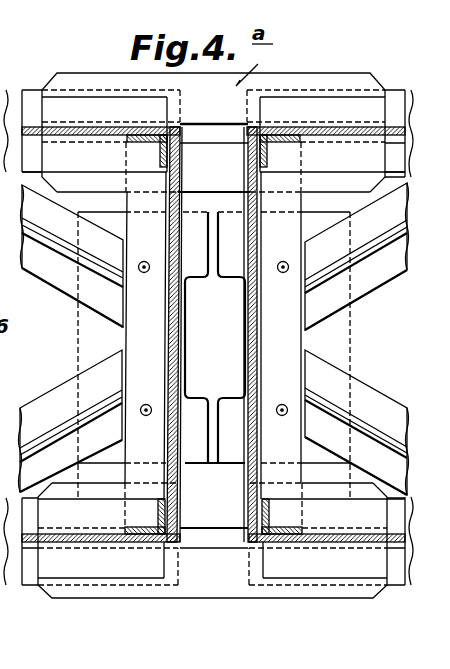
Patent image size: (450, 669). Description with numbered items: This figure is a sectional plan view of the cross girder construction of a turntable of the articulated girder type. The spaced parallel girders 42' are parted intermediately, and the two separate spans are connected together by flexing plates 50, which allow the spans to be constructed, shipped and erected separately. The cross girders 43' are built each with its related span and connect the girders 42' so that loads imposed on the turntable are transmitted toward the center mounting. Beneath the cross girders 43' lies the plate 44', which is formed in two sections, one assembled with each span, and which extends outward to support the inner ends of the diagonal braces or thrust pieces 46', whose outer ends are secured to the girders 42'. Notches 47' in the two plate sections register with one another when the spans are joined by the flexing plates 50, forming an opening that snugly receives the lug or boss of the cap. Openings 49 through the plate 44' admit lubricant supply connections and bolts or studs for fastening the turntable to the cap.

The girder 42' is at (208, 338).
The cross girder 43' is at (212, 334).
The plate 44' is at (209, 344).
The diagonal brace 46' is at (214, 339).
The notch 47' is at (215, 337).
The opening 49 is at (144, 273).
The flexing plate 50 is at (215, 143).